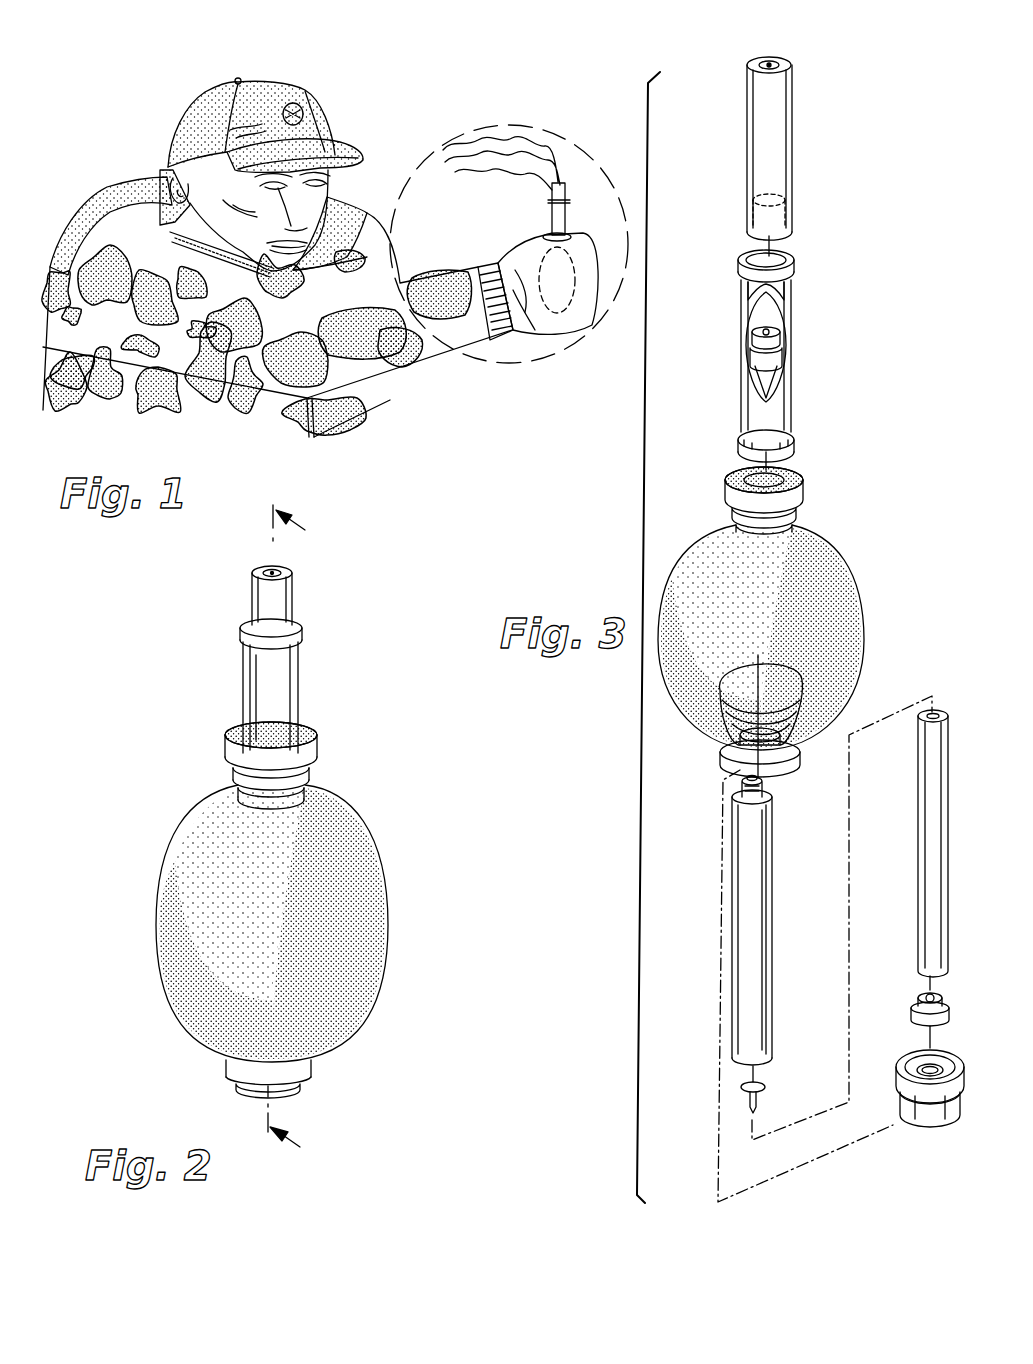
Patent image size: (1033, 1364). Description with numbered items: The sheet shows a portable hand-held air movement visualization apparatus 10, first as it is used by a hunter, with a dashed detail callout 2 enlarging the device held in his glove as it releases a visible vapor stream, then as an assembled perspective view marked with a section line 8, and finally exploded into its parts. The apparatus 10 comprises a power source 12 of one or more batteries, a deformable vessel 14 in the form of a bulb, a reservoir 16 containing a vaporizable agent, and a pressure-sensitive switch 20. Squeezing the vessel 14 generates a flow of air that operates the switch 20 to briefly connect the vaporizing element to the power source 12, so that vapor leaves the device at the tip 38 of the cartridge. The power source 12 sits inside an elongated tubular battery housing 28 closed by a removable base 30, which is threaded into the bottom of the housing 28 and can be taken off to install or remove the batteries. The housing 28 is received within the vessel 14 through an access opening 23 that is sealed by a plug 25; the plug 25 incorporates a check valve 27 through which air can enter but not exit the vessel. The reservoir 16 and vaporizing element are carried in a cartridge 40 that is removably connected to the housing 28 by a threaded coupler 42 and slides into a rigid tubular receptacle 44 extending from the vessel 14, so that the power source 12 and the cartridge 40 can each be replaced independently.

In FIG. 1, the detail view of FIG. 2 is at (525, 352).
In FIG. 2, the section line 8- 8 is at (296, 834).
In FIG. 1, the apparatus 10 is at (541, 223).
In FIG. 2, the apparatus 10 is at (151, 729).
In FIG. 3, the apparatus 10 is at (893, 180).
In FIG. 3, the power source 12 is at (918, 848).
In FIG. 2, the vessel 14 is at (384, 860).
In FIG. 3, the vessel 14 is at (702, 526).
In FIG. 2, the reservoir 16 is at (253, 578).
In FIG. 3, the reservoir 16 is at (784, 68).
In FIG. 3, the switch 20 is at (766, 1090).
In FIG. 3, the access opening 23 is at (777, 748).
In FIG. 3, the plug 25 is at (915, 1094).
In FIG. 3, the check valve 27 is at (928, 1066).
In FIG. 3, the battery housing 28 is at (776, 902).
In FIG. 3, the base 30 is at (915, 1006).
In FIG. 2, the orifice 38 is at (270, 571).
In FIG. 3, the orifice 38 is at (768, 64).
In FIG. 2, the cartridge 40 is at (269, 577).
In FIG. 3, the cartridge 40 is at (763, 137).
In FIG. 3, the threaded coupler 42 is at (756, 330).
In FIG. 2, the receptacle 44 is at (298, 706).
In FIG. 3, the receptacle 44 is at (742, 402).